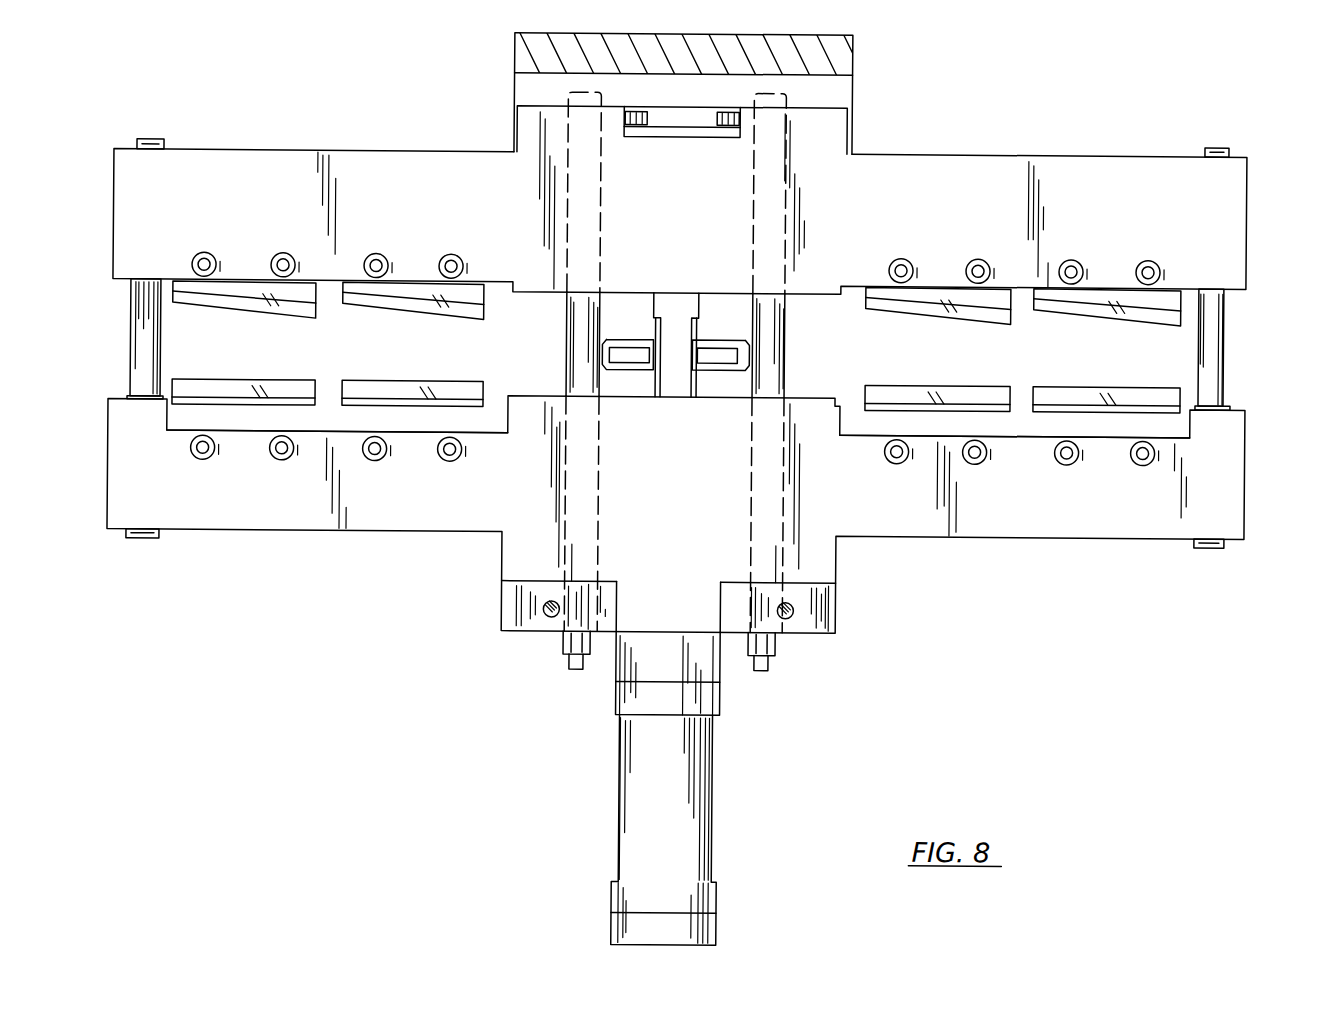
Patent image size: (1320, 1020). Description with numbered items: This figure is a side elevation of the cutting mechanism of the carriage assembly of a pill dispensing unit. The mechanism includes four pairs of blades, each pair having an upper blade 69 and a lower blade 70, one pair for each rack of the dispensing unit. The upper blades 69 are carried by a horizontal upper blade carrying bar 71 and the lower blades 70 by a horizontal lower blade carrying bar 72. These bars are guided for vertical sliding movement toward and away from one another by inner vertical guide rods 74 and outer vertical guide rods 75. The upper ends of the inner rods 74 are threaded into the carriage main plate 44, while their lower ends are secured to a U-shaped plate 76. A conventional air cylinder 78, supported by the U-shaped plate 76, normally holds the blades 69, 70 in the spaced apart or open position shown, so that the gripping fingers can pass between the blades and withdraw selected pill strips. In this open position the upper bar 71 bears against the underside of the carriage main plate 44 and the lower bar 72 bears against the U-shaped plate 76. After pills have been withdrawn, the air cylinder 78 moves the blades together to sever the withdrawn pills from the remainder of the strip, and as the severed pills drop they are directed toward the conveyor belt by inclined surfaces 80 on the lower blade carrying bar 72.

The carriage main plate 44 is at (530, 88).
The upper blade 69 is at (252, 310).
The lower blade 70 is at (247, 387).
The upper blade carrying bar 71 is at (958, 158).
The lower blade carrying bar 72 is at (898, 523).
The inner vertical guide rods 74 is at (566, 346).
The outer vertical guide rods 75 is at (130, 341).
The U-shaped plate 76 is at (523, 623).
The air cylinder 78 is at (630, 767).
The inclined surfaces 80 is at (398, 428).